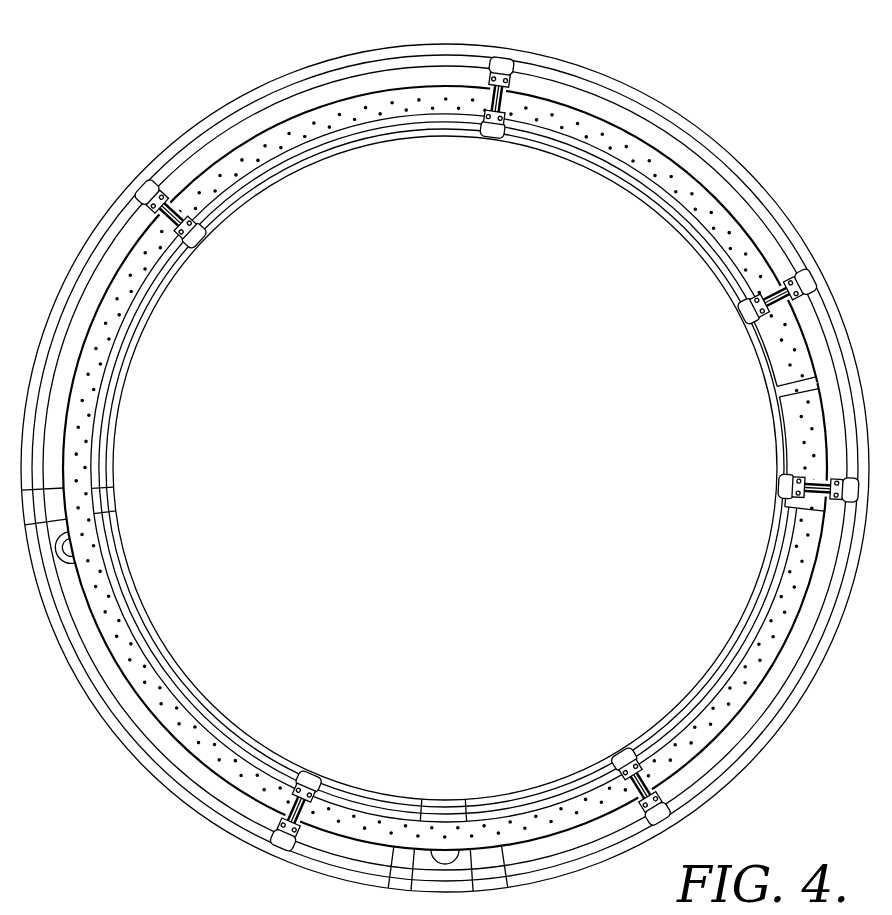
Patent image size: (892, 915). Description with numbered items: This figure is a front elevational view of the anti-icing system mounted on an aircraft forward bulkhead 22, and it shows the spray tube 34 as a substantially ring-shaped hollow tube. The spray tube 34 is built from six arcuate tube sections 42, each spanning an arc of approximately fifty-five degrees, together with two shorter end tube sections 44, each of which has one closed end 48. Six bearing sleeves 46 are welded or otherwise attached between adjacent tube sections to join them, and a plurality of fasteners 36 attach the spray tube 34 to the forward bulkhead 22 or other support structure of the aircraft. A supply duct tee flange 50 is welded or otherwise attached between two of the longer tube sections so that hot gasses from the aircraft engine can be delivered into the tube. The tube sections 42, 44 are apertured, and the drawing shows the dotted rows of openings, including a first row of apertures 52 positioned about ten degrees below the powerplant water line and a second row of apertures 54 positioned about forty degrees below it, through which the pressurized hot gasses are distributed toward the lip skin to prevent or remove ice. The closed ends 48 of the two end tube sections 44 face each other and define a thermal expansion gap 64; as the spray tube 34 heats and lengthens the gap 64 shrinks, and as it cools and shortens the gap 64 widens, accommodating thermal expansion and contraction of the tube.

The forward bulkhead 22 is at (175, 775).
The spray tube 34 is at (283, 122).
The fasteners 36 is at (443, 430).
The arcuate tube sections 42 is at (390, 97).
The end tube sections 44 is at (805, 338).
The bearing sleeves 46 is at (505, 112).
The closed end 48 is at (790, 392).
The supply duct tee flange 50 is at (100, 540).
The first row of apertures 52 is at (140, 270).
The second row of apertures 54 is at (100, 452).
The thermal expansion gap 64 is at (790, 400).